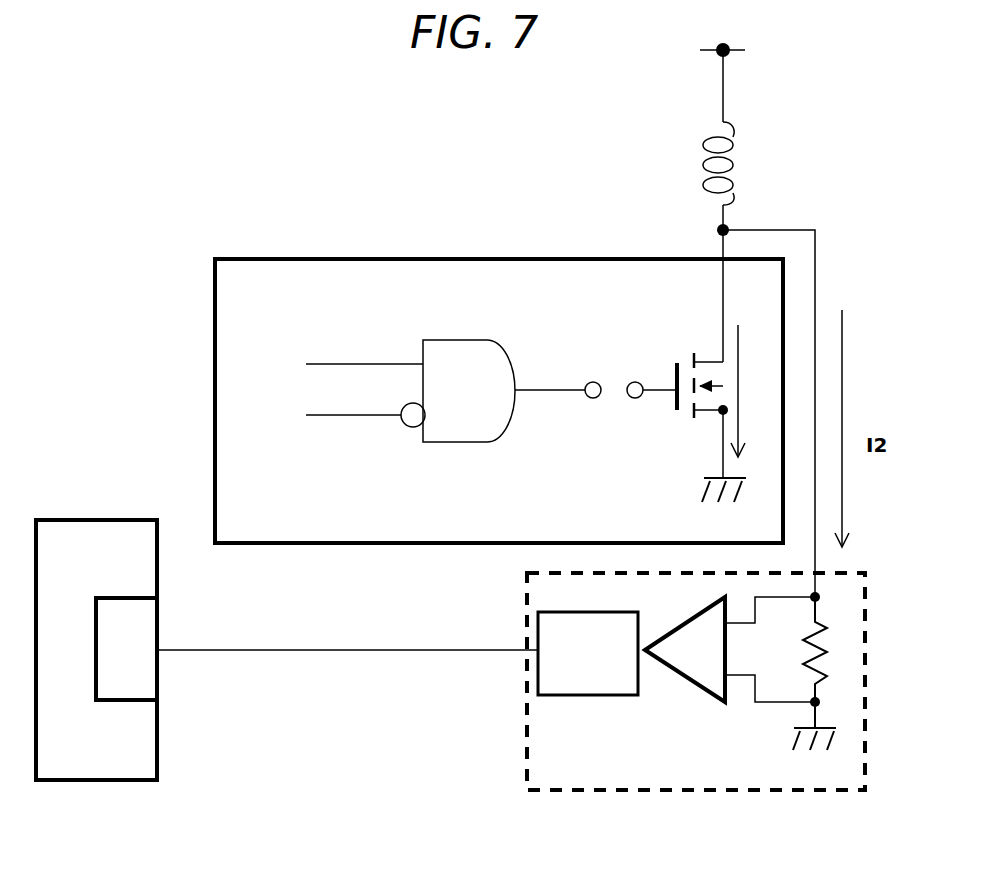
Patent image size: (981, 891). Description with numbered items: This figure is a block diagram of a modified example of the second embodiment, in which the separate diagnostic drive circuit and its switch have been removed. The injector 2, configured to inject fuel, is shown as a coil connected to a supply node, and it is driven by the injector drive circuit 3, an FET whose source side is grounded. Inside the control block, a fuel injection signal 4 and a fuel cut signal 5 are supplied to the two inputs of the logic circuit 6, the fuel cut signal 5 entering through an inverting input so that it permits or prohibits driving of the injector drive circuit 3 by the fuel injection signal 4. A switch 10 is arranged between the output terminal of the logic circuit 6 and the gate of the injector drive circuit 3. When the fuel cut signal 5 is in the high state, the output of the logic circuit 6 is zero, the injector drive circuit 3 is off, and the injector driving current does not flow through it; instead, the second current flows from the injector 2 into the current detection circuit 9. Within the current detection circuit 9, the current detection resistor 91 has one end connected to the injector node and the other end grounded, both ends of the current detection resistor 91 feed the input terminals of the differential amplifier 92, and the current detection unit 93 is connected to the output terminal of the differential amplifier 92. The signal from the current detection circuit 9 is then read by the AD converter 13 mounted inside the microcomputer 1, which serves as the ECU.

The microcomputer 1 is at (390, 247).
The injector 2 is at (735, 172).
The injector drive circuit 3 is at (690, 348).
The fuel injection signal 4 is at (340, 361).
The fuel cut signal 5 is at (342, 418).
The logic circuit 6 is at (450, 338).
The current detection circuit 9 is at (527, 760).
The switch 10 is at (633, 363).
The AD converter 13 is at (157, 692).
The current detection resistor 91 is at (833, 655).
The differential amplifier 92 is at (668, 673).
The current detection unit 93 is at (563, 688).